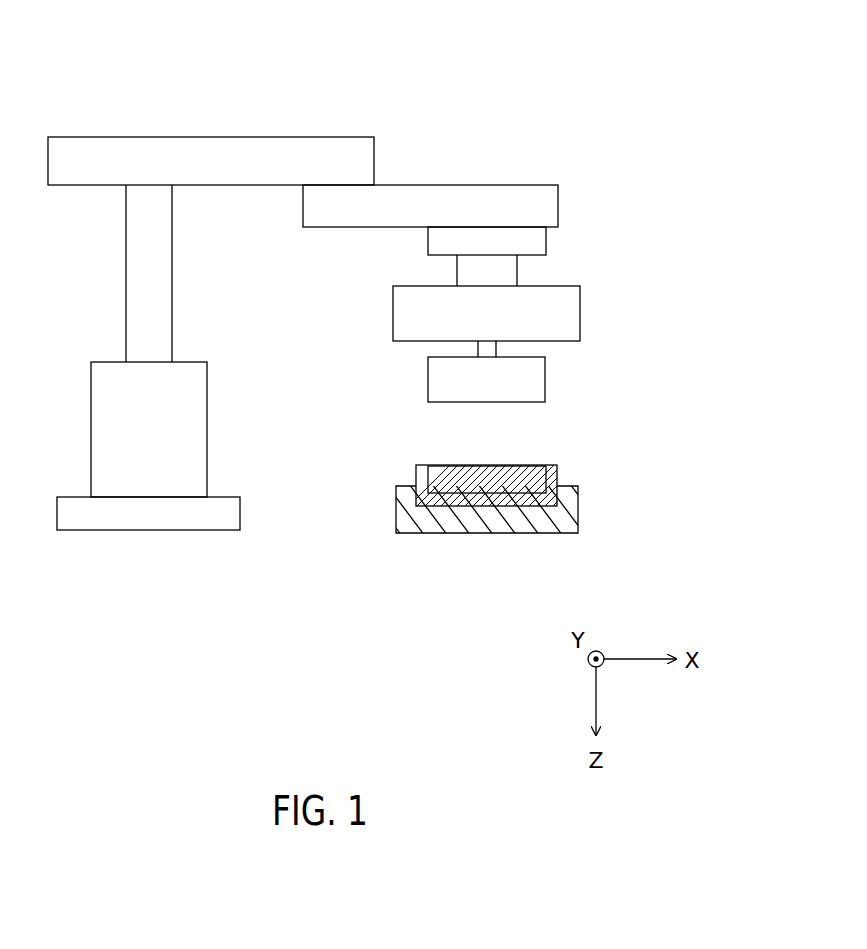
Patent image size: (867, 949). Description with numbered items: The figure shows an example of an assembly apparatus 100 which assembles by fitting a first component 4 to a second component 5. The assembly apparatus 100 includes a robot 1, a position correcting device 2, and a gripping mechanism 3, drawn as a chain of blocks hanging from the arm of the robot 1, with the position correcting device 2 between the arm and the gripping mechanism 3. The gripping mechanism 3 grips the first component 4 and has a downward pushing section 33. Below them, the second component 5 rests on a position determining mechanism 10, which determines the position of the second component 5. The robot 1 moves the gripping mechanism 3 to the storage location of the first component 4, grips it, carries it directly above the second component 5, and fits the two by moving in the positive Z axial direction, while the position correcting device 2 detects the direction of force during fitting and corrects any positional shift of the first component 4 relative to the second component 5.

The robot 1 is at (272, 137).
The assembly apparatus 100 is at (552, 105).
The position correcting device 2 is at (517, 272).
The gripping mechanism 3 is at (580, 302).
The downward pushing section 33 is at (496, 350).
The first component 4 is at (545, 385).
The second component 5 is at (552, 465).
The position determining mechanism 10 is at (578, 515).